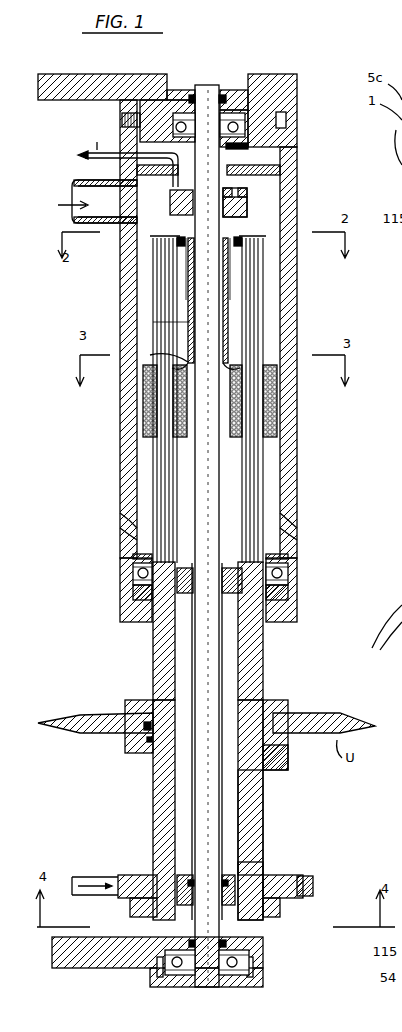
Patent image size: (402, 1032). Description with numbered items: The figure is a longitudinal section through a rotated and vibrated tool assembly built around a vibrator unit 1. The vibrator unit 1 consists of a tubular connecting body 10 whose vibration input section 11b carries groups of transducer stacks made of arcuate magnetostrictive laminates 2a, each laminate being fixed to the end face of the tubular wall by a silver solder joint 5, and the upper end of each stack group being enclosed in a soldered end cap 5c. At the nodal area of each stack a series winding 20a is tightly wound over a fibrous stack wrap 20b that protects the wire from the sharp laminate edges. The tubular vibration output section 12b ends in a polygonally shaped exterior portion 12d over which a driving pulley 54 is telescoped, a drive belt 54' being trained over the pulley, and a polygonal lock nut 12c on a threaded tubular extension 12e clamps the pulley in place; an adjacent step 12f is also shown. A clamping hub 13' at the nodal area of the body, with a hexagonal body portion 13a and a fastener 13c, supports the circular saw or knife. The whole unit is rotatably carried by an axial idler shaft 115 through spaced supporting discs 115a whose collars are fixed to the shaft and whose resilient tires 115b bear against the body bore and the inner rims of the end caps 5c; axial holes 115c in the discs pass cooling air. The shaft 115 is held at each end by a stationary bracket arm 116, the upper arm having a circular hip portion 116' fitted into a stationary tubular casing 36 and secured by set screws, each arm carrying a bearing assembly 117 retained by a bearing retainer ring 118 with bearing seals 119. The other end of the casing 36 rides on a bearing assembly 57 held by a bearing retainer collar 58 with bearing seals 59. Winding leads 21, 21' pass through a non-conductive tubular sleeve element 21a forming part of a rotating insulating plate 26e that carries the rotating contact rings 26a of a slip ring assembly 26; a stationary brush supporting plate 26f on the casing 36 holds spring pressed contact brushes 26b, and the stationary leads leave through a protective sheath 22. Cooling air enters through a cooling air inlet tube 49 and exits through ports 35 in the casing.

The vibrator unit 1 is at (143, 291).
The magnetostrictive laminates 2a is at (160, 313).
The silver solder joint 5 is at (148, 555).
The end cap 5c is at (175, 238).
The tubular connecting body 10 is at (271, 820).
The vibration input section 11b is at (160, 646).
The tubular vibration output section 12b is at (160, 786).
The polygonal lock nut 12c is at (282, 912).
The polygonally shaped exterior portion 12d is at (152, 878).
The threaded tubular extension 12e is at (165, 917).
The hub tab 12f is at (260, 875).
The clamping hub 13' is at (195, 721).
The hexagonal body portion 13a is at (282, 720).
The blade fastener 13c is at (146, 752).
The series winding 20a is at (146, 428).
The stack wrap 20b is at (277, 365).
The winding lead 21 is at (186, 247).
The winding lead 21' is at (116, 260).
The non-conductive tubular sleeve element 21a is at (153, 322).
The protective sheath 22 is at (97, 138).
The slip ring assembly 26 is at (254, 225).
The rotating contact rings 26a is at (244, 191).
The spring pressed contact brushes 26b is at (176, 182).
The rotating insulating plate 26e is at (247, 211).
The stationary brush supporting plate 26f is at (275, 176).
The ports 35 is at (124, 532).
The stationary tubular protective casing 36 is at (114, 494).
The cooling air inlet tube 49 is at (72, 183).
The driving pulley 54 is at (295, 874).
The drive belt 54' is at (322, 883).
The bearing assembly 57 is at (140, 574).
The bearing retainer collar 58 is at (127, 613).
The bearing seals 59 is at (135, 568).
The axial idler shaft 115 is at (203, 463).
The supporting discs 115a is at (180, 254).
The resilient tire 115b is at (235, 595).
The axial holes 115c is at (235, 565).
The bracket arms 116 is at (149, 525).
The circular hip portion 116' is at (281, 96).
The bearing assembly 117 is at (238, 110).
The bearing retainer ring 118 is at (178, 90).
The bearing seals 119 is at (224, 95).